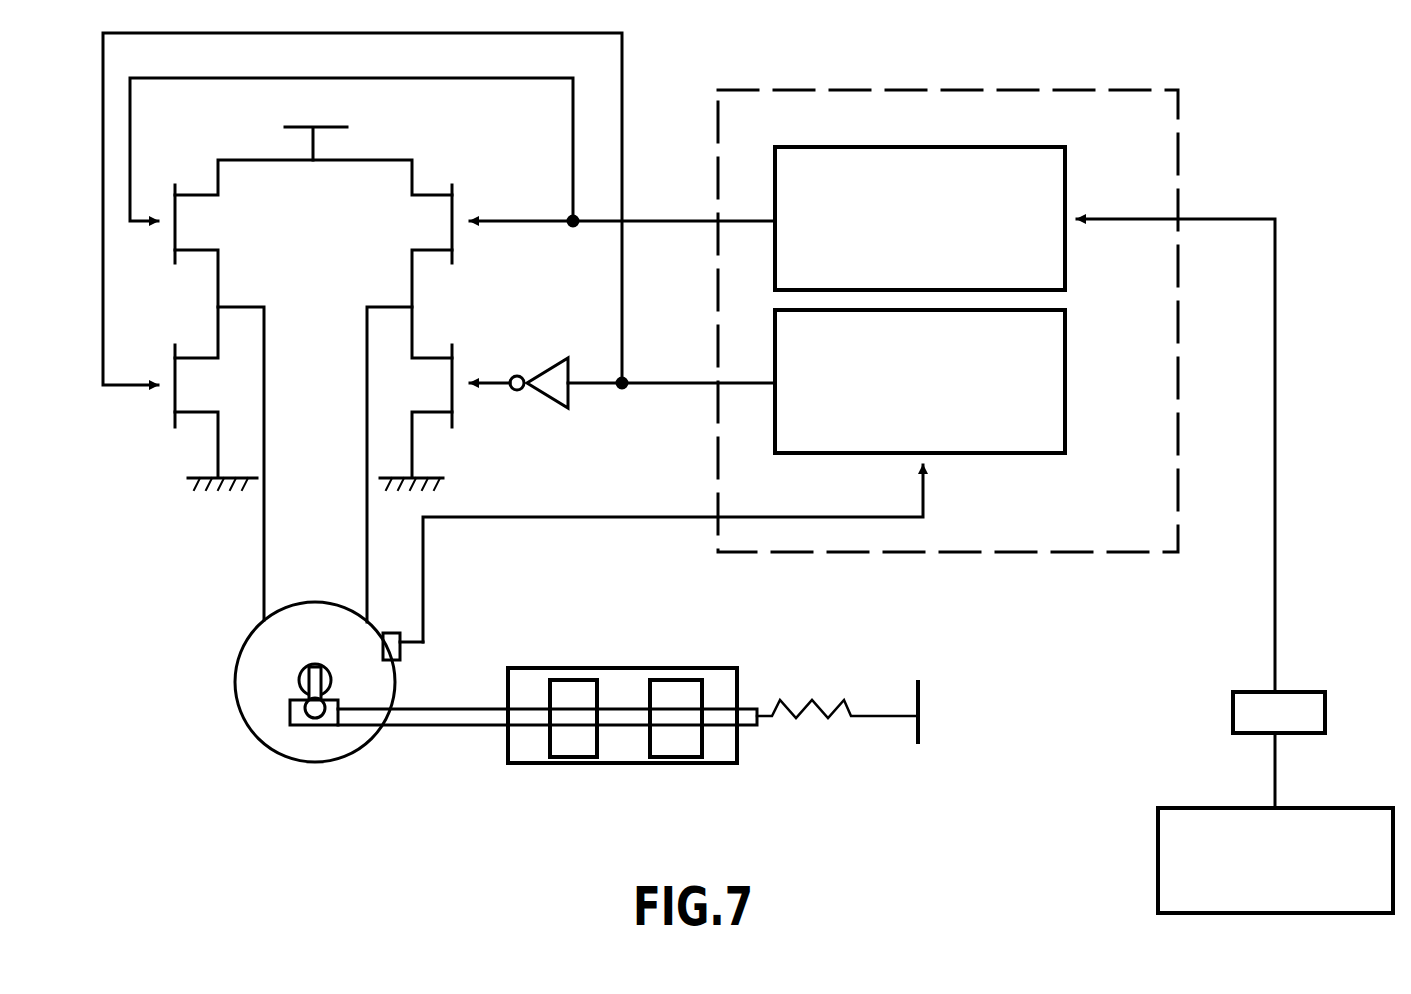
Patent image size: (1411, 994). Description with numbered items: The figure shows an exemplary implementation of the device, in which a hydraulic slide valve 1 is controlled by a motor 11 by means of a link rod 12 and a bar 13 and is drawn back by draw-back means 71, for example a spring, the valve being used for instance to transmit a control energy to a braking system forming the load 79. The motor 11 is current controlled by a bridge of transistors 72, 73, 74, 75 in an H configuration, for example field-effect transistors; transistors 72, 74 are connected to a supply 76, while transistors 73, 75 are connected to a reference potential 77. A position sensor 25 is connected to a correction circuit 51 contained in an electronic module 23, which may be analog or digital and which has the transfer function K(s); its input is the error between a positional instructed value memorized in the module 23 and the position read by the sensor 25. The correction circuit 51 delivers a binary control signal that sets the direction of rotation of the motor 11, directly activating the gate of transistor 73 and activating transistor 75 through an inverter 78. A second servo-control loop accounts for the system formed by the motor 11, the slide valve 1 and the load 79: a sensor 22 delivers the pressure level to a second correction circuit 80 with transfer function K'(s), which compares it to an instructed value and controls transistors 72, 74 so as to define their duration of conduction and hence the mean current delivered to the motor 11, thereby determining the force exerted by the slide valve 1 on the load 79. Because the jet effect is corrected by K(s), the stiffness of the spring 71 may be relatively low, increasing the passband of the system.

The hydraulic slide valve 1 is at (710, 668).
The motor 11 is at (238, 702).
The link rod 12 is at (332, 690).
The bar 13 is at (440, 709).
The sensor 22 is at (1300, 692).
The electronic module 23 is at (1180, 92).
The position sensor 25 is at (386, 633).
The correction circuit 51 is at (1067, 402).
The draw-back means 71 is at (830, 718).
The transistor 72 is at (200, 195).
The transistor 73 is at (196, 358).
The transistor 74 is at (432, 195).
The transistor 75 is at (432, 358).
The supply 76 is at (338, 127).
The reference potential 77 is at (200, 478).
The inverter 78 is at (542, 394).
The load 79 is at (1370, 808).
The second correction circuit 80 is at (1067, 200).